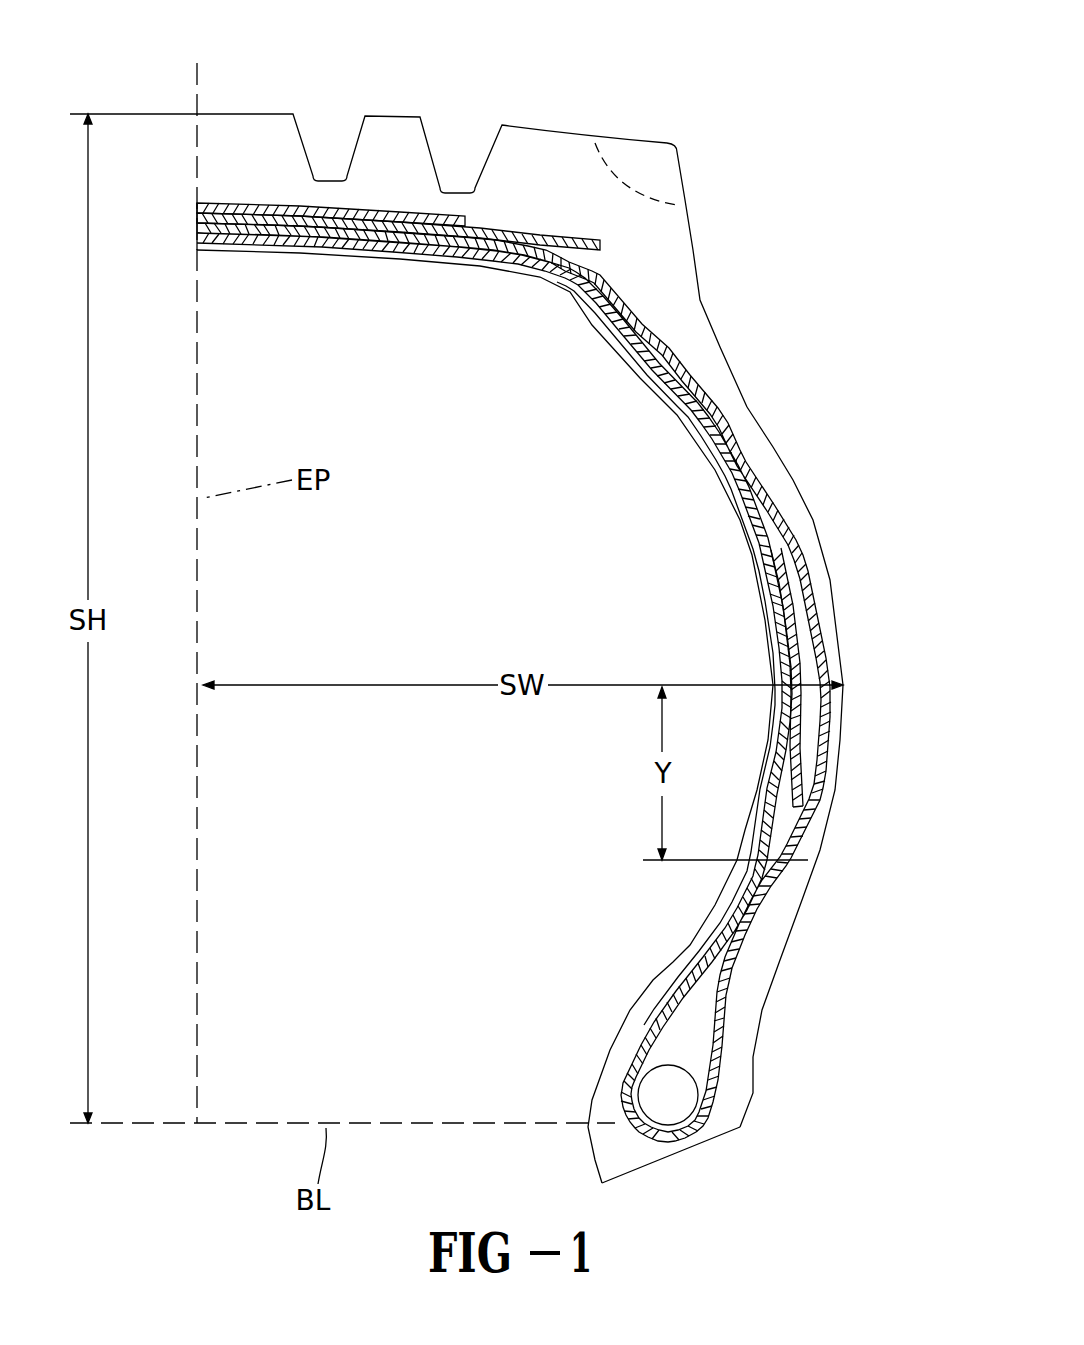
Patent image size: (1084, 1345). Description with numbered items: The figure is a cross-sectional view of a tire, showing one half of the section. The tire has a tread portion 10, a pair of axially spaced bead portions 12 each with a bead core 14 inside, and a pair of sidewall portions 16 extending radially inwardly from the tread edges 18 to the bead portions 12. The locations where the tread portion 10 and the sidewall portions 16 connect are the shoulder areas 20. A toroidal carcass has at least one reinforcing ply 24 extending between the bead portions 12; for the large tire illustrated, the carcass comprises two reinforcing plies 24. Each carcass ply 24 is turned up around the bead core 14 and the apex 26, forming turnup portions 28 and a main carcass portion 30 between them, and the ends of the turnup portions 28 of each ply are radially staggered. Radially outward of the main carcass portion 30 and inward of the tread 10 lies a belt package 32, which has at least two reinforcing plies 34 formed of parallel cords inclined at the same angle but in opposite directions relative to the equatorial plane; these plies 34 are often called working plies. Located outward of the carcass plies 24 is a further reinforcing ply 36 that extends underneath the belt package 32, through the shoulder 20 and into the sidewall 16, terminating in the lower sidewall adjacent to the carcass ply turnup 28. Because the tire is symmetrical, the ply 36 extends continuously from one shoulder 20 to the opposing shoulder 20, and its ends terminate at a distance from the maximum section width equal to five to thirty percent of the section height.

The tread portion 10 is at (379, 110).
The bead portion 12 is at (572, 1057).
The bead core 14 is at (673, 1100).
The sidewall portion 16 is at (852, 598).
The tread edge 18 is at (657, 140).
The shoulder area 20 is at (693, 260).
The reinforcing ply 24 is at (650, 347).
The apex 26 is at (685, 1022).
The turnup portion 28 is at (767, 897).
The main carcass portion 30 is at (497, 248).
The belt package 32 is at (207, 203).
The belt reinforcing ply 34 is at (233, 205).
The reinforcing ply 36 is at (787, 500).